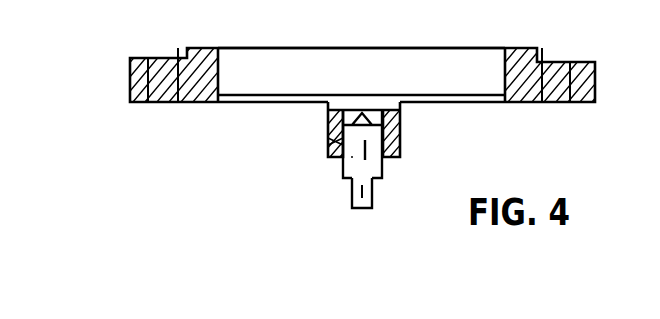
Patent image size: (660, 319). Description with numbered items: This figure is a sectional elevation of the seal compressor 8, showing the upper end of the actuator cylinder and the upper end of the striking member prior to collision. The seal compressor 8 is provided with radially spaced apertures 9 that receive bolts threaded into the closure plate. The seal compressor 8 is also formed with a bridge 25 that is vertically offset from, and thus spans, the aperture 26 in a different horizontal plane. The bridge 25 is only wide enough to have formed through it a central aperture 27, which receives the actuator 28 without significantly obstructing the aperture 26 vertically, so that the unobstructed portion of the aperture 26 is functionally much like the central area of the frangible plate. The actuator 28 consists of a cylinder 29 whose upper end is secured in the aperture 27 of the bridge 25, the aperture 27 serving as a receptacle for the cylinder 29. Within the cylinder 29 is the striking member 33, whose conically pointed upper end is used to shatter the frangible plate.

The seal compressor 8 is at (130, 80).
The radially spaced apertures 9 is at (150, 101).
The aperture 26 is at (361, 71).
The bridge 25 is at (400, 130).
The aperture 27 is at (330, 142).
The cylinder 29 is at (343, 176).
The actuator 28 is at (401, 192).
The striking member 33 is at (352, 199).